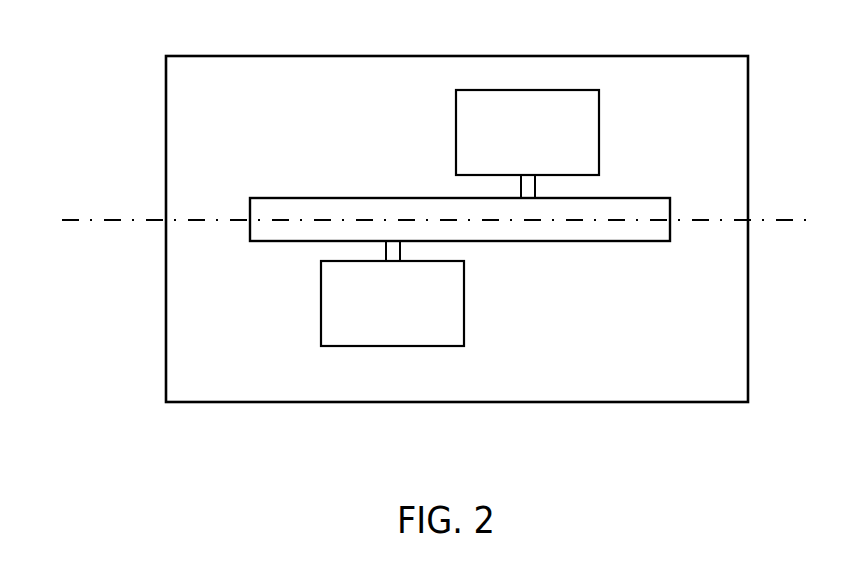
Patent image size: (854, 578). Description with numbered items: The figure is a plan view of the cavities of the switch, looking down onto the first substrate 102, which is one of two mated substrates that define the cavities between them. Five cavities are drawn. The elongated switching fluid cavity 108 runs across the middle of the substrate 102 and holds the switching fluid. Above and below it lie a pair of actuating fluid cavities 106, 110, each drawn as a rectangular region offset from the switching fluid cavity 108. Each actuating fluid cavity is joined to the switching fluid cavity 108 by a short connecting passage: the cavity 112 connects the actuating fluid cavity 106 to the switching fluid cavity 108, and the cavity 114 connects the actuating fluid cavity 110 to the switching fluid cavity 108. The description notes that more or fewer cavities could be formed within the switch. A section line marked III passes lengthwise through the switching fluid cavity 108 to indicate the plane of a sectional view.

The first substrate 102 is at (729, 383).
The actuating fluid cavity 106 is at (460, 341).
The switching fluid cavity 108 is at (623, 197).
The actuating fluid cavity 110 is at (594, 168).
The connecting cavity 112 is at (386, 250).
The connecting cavity 114 is at (521, 182).
The section line III- III is at (67, 209).